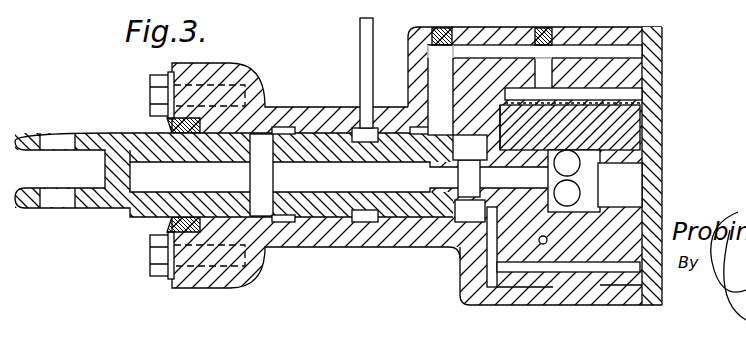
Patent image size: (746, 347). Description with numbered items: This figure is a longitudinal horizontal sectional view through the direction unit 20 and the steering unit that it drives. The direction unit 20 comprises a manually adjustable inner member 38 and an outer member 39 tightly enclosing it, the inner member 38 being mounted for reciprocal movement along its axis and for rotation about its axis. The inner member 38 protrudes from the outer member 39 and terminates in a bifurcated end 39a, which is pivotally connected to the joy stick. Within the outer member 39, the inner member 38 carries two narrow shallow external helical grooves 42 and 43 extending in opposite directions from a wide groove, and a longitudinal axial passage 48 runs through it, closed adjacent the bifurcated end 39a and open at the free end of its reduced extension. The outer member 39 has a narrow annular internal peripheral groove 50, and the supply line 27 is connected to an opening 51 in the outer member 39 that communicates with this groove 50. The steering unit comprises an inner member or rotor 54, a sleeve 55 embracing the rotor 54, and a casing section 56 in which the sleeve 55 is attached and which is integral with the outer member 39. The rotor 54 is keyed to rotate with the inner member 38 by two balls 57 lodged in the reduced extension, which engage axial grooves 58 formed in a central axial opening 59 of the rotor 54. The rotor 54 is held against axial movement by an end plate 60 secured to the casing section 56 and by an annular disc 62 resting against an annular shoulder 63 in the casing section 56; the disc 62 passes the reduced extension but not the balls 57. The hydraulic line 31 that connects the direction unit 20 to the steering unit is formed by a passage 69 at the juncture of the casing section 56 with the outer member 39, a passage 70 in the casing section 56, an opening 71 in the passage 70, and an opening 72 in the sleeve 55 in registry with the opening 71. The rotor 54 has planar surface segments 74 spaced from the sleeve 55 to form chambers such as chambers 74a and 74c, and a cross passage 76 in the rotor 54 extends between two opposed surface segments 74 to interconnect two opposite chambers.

The direction unit 20 is at (313, 86).
The supply line 27 is at (374, 42).
The hydraulic line 31 is at (479, 45).
The inner member 38 is at (130, 133).
The outer member 39 is at (288, 107).
The bifurcated end 39a is at (80, 210).
The helical groove 42 is at (320, 222).
The helical groove 43 is at (395, 222).
The longitudinal axial passage 48 is at (341, 162).
The narrow annular internal peripheral groove 50 is at (383, 128).
The opening 51 is at (360, 128).
The rotor 54 is at (665, 118).
The sleeve 55 is at (622, 298).
The casing section 56 is at (465, 305).
The balls 57 is at (572, 207).
The axial grooves 58 is at (638, 157).
The central axial opening 59 is at (604, 194).
The end plate 60 is at (664, 186).
The annular disc 62 is at (470, 249).
The annular shoulder 63 is at (515, 93).
The passage 69 is at (438, 76).
The passage 70 is at (508, 48).
The opening 71 is at (551, 58).
The opening 72 is at (557, 99).
The surface segments 74 is at (620, 103).
The chamber 74a is at (640, 74).
The chamber 74c is at (580, 266).
The cross passage 76 is at (505, 290).